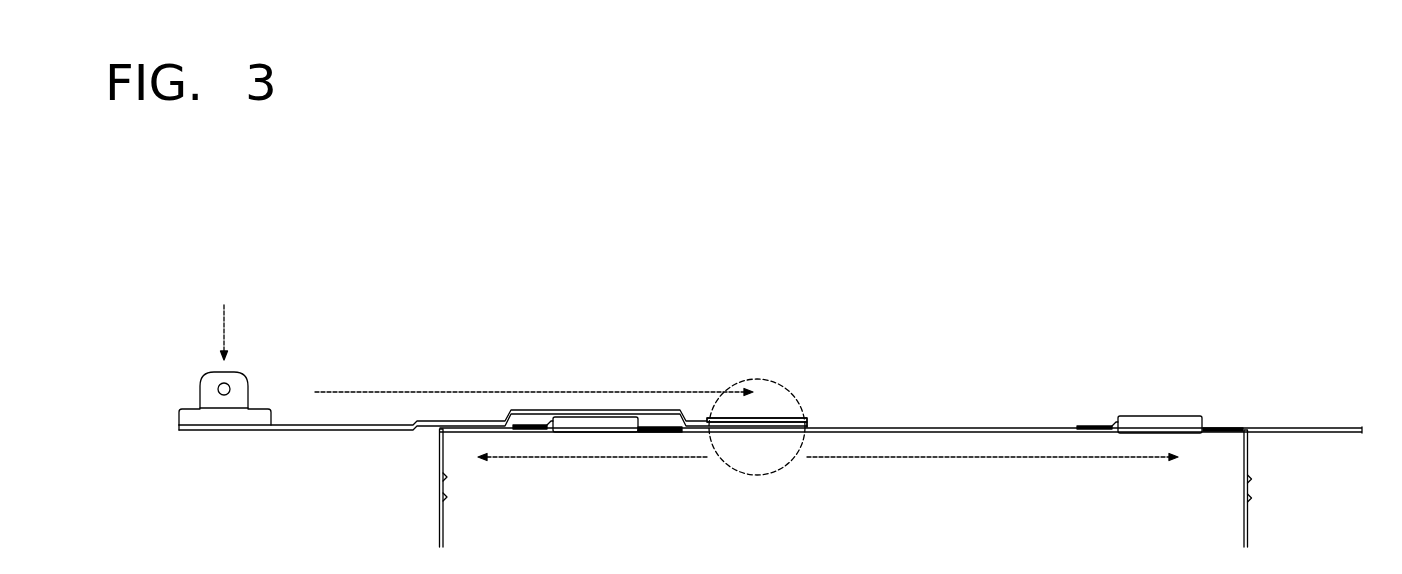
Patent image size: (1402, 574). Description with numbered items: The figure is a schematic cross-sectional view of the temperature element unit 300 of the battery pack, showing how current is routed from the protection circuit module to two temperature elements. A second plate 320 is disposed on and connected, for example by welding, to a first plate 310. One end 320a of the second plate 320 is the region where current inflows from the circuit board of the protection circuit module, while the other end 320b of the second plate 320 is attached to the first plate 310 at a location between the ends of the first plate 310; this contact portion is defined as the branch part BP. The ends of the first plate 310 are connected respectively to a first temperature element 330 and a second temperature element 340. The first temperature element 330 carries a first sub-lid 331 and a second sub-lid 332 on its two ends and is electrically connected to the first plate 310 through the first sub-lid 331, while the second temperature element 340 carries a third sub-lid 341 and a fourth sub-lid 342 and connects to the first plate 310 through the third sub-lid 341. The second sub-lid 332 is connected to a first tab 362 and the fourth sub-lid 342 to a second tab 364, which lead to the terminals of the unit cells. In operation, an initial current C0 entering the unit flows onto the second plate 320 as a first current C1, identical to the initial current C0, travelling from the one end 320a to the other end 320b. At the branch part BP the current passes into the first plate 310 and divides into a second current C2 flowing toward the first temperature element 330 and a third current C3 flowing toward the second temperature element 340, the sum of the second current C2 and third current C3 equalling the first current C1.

The temperature element unit 300 is at (1155, 268).
The first plate 310 is at (955, 427).
The second plate 320 is at (332, 432).
The one end of the second plate 320a is at (198, 370).
The other end of the second plate 320b is at (808, 400).
The first temperature element 330 is at (595, 427).
The first sub-lid 331 is at (660, 432).
The second sub-lid 332 is at (530, 432).
The second temperature element 340 is at (1160, 416).
The third sub-lid 341 is at (1097, 426).
The fourth sub-lid 342 is at (1221, 428).
The first tab 362 is at (440, 450).
The second tab 364 is at (1248, 458).
The initial current C0 is at (240, 328).
The first current C1 is at (534, 380).
The second current C2 is at (592, 471).
The third current C3 is at (992, 472).
The branch part BP is at (757, 378).